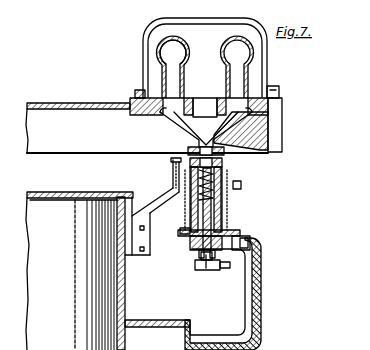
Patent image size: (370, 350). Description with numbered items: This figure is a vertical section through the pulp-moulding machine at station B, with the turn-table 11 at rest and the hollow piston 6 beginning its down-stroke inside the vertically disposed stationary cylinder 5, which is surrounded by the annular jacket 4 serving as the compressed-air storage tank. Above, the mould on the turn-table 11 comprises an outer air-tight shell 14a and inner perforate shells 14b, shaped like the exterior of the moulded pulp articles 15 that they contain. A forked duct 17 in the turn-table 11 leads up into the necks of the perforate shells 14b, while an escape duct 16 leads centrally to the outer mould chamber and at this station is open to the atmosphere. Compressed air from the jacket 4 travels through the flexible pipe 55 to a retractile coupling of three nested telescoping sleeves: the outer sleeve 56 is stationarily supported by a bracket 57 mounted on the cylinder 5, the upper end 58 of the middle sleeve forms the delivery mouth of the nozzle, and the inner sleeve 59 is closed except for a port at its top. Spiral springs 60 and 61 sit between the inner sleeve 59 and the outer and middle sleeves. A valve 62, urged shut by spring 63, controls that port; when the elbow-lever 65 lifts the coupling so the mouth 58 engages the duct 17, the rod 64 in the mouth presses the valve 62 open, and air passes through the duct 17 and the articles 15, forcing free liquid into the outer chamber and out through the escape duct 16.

The annular jacket 4 is at (157, 335).
The stationary cylinder 5 is at (55, 192).
The hollow piston 6 is at (81, 275).
The turn-table 11 is at (53, 103).
The outer air-tight shell 14a is at (267, 63).
The inner hollow perforate shell 14b is at (220, 46).
The moulded pulp article 15 is at (205, 67).
The escape duct 16 is at (205, 107).
The forked duct 17 is at (170, 128).
The flexible pipe 55 is at (263, 301).
The outer sleeve 56 is at (184, 208).
The bracket 57 is at (155, 197).
The nozzle mouth 58 is at (188, 151).
The inner sleeve 59 is at (188, 240).
The spiral spring 60 is at (180, 232).
The spiral spring 61 is at (241, 187).
The valve 62 is at (223, 171).
The spring 63 is at (228, 200).
The rod 64 is at (222, 158).
The elbow-lever 65 is at (212, 270).